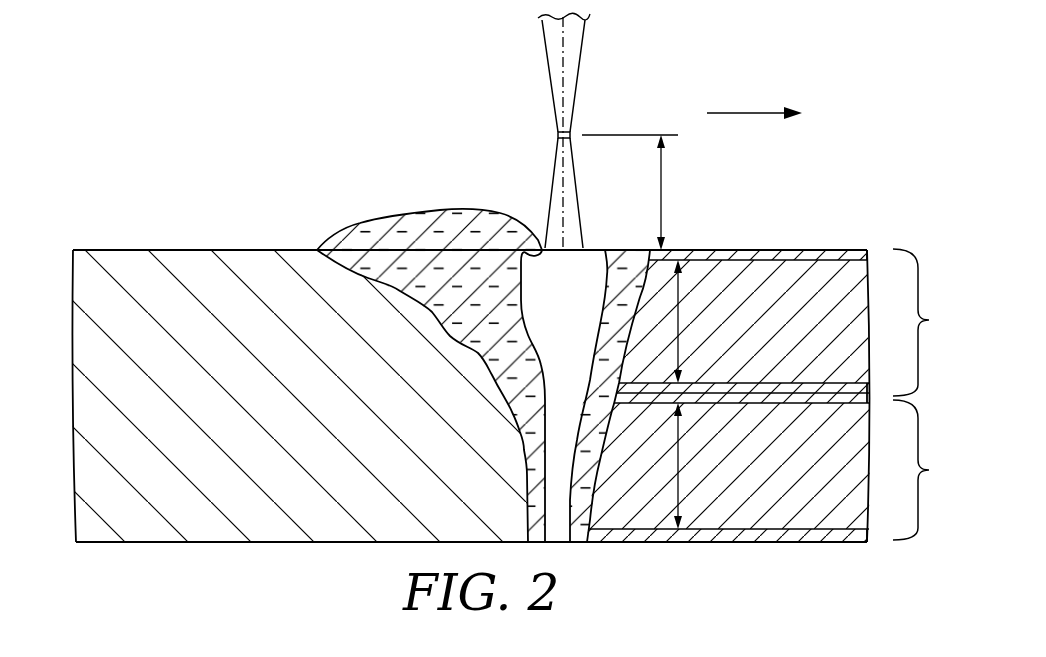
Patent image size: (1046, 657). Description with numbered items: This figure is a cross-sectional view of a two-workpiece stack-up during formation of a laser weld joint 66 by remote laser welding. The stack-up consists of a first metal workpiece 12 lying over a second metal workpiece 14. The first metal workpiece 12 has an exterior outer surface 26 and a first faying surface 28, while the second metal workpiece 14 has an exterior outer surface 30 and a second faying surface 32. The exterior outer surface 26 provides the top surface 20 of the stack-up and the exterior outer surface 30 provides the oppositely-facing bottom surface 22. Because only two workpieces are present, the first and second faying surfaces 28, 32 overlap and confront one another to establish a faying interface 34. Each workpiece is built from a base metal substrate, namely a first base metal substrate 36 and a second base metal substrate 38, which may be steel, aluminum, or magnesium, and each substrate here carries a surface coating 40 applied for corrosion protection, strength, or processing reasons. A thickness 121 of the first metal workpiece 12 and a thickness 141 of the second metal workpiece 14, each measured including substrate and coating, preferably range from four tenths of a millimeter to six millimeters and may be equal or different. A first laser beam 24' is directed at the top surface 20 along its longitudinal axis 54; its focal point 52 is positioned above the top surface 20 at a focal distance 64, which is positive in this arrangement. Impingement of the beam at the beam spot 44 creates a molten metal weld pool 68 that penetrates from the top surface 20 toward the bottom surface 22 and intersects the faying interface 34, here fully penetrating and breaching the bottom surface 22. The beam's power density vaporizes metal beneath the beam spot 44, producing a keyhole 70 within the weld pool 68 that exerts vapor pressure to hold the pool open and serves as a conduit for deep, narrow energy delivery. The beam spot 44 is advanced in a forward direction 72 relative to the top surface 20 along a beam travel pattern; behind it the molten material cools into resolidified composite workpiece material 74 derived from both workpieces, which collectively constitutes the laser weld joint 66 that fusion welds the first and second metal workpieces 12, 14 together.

The first metal workpiece 12 is at (925, 322).
The second metal workpiece 14 is at (926, 470).
The top surface 20 is at (754, 240).
The bottom surface 22 is at (663, 556).
The first laser beam 24' is at (538, 130).
The exterior outer surface 26 is at (828, 250).
The first faying surface 28 is at (745, 395).
The exterior outer surface 30 is at (800, 542).
The second faying surface 32 is at (805, 372).
The faying interface 34 is at (720, 412).
The first base metal substrate 36 is at (851, 319).
The second base metal substrate 38 is at (851, 486).
The surface coating 40 is at (863, 255).
The beam spot 44 is at (573, 243).
The focal point 52 is at (568, 128).
The longitudinal axis 54 is at (564, 52).
The focal distance 64 is at (630, 192).
The laser weld joint 66 is at (141, 266).
The molten metal weld pool 68 is at (423, 232).
The keyhole 70 is at (560, 275).
The forward direction 72 is at (743, 113).
The resolidified composite workpiece material 74 is at (257, 310).
The thickness of the first metal workpiece 121 is at (682, 321).
The thickness of the second metal workpiece 141 is at (680, 466).